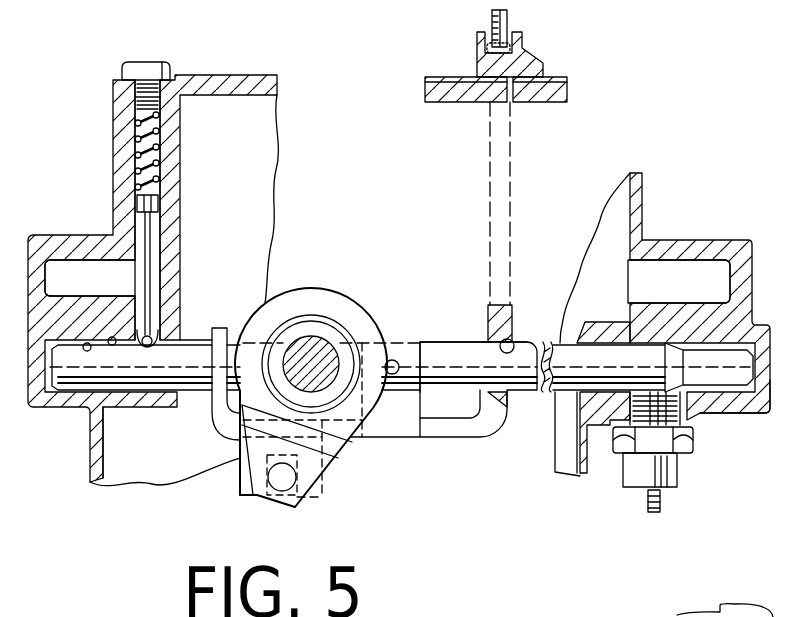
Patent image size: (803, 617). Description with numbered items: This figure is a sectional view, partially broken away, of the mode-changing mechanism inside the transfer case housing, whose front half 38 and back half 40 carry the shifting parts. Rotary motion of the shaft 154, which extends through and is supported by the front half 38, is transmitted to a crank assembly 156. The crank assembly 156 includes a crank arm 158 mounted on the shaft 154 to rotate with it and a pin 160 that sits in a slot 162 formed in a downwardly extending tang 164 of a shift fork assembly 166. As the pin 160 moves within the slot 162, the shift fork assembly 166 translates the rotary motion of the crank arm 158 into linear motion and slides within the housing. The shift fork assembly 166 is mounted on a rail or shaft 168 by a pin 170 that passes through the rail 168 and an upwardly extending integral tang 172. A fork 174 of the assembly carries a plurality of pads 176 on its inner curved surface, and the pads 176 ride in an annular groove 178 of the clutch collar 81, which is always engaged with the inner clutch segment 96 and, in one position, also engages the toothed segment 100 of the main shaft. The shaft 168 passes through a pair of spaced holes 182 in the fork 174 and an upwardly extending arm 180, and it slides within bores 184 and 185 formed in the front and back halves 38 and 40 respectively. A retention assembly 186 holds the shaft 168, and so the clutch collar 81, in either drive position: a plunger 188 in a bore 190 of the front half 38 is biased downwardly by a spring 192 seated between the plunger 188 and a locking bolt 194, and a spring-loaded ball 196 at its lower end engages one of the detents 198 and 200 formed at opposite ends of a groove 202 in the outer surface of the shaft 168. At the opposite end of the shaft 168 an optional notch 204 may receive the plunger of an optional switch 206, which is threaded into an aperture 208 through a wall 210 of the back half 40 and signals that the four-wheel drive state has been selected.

The front half 38 is at (228, 76).
The back half 40 is at (710, 240).
The clutch collar 81 is at (530, 58).
The inner clutch segment 96 is at (563, 92).
The toothed segment 100 is at (447, 98).
The shaft 154 is at (313, 352).
The crank assembly 156 is at (343, 466).
The crank arm 158 is at (386, 393).
The pin 160 is at (281, 492).
The slot 162 is at (292, 504).
The tang 164 is at (243, 487).
The shift fork assembly 166 is at (471, 433).
The rail or shaft 168 is at (205, 342).
The pin 170 is at (398, 358).
The tang 172 is at (425, 348).
The fork 174 is at (500, 165).
The pads 176 is at (490, 48).
The annular groove 178 is at (510, 30).
The arm 180 is at (205, 467).
The holes 182 is at (515, 347).
The bore 184 is at (98, 385).
The bore 185 is at (707, 347).
The retention assembly 186 is at (137, 60).
The plunger 188 is at (130, 287).
The bore 190 is at (137, 230).
The spring 192 is at (147, 157).
The locking bolt 194 is at (167, 68).
The spring-loaded ball 196 is at (143, 330).
The detent 198 is at (147, 350).
The detent 200 is at (85, 352).
The groove 202 is at (112, 346).
The notch 204 is at (607, 360).
The switch 206 is at (632, 478).
The aperture 208 is at (638, 403).
The wall 210 is at (747, 410).